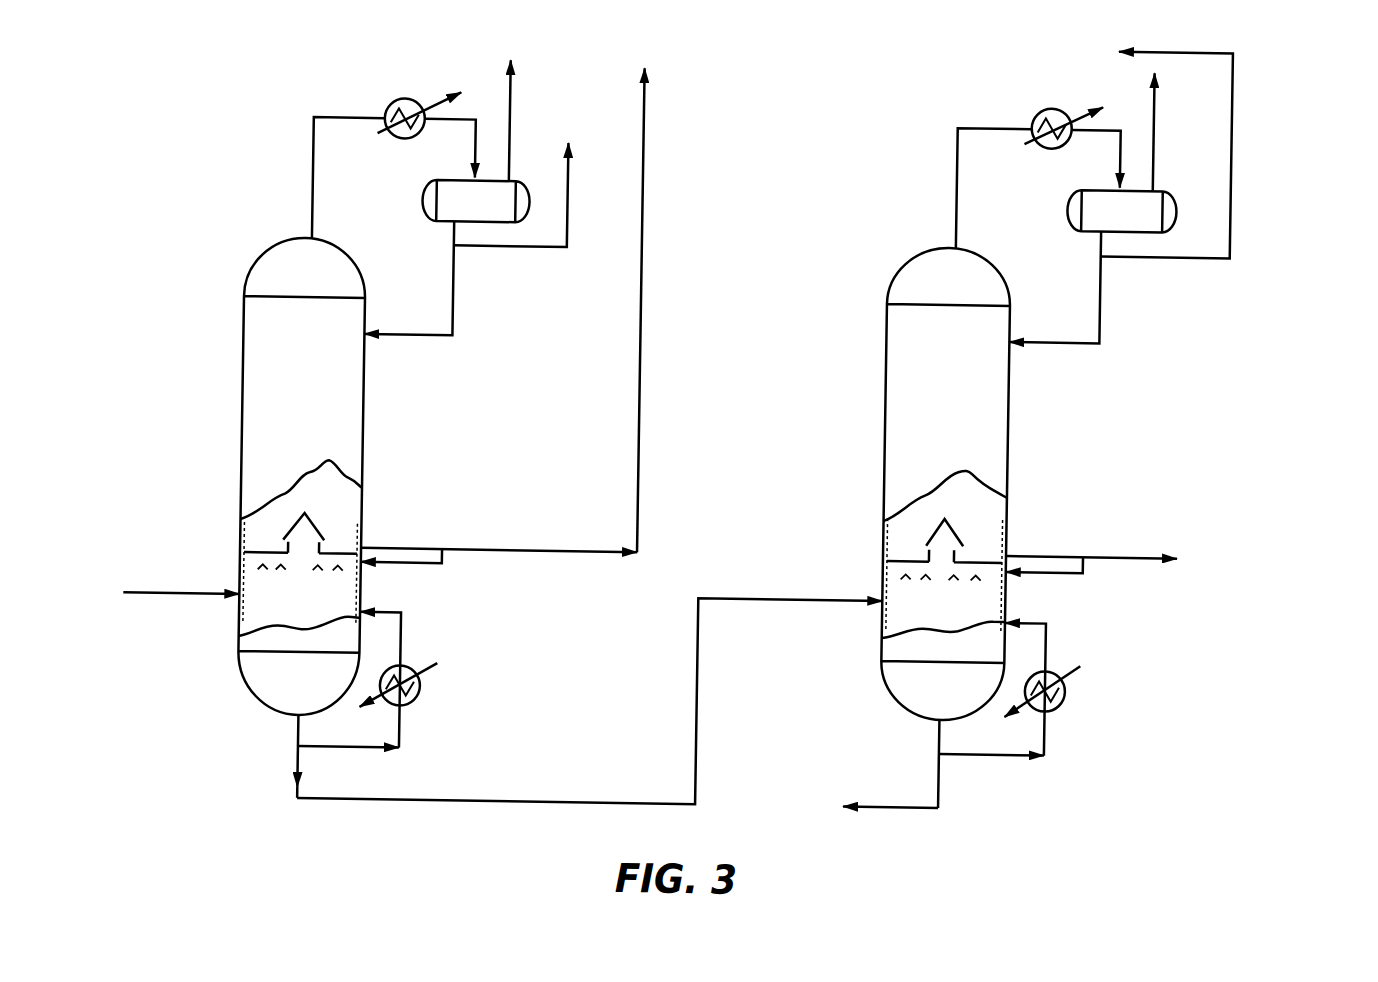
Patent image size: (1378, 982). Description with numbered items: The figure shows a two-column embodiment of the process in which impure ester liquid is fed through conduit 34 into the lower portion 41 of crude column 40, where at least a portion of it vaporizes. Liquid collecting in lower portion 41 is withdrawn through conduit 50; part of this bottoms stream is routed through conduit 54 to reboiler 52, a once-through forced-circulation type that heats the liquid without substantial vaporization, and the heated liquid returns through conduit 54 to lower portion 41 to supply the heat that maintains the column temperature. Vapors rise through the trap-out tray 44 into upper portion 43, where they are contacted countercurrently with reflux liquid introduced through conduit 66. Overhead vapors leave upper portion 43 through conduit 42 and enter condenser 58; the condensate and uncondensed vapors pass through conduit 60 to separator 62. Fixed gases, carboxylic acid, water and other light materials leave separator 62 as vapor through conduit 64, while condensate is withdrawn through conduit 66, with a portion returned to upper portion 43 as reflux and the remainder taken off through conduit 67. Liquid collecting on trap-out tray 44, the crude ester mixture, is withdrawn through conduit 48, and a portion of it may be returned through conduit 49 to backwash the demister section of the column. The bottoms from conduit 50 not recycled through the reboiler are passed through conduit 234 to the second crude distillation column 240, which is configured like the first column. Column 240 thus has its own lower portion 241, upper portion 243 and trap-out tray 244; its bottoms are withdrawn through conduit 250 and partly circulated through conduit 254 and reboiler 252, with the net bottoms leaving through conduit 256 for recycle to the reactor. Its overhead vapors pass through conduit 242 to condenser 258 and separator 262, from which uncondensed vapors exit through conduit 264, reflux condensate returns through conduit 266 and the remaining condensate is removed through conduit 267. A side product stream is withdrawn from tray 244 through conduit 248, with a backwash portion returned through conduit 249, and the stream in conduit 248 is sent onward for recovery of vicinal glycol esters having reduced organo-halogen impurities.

The conduit 34 is at (151, 601).
The crude column 40 is at (241, 438).
The lower portion 41 is at (286, 628).
The conduit 42 is at (308, 188).
The upper portion 43 is at (316, 515).
The trap-out tray 44 is at (292, 527).
The conduit 48 is at (638, 420).
The conduit 49 is at (445, 562).
The conduit 50 is at (302, 732).
The reboiler 52 is at (423, 692).
The conduit 54 is at (406, 610).
The condenser 58 is at (386, 112).
The conduit 60 is at (462, 118).
The separator 62 is at (433, 227).
The conduit 64 is at (505, 108).
The conduit 66 is at (411, 340).
The conduit 67 is at (503, 252).
The conduit 234 is at (700, 700).
The second crude distillation column 240 is at (884, 432).
The lower portion 241 is at (923, 620).
The conduit 242 is at (991, 97).
The upper portion 243 is at (955, 513).
The trap-out tray 244 is at (929, 524).
The conduit 248 is at (1153, 522).
The conduit 249 is at (1070, 568).
The conduit 250 is at (943, 735).
The reboiler 252 is at (1064, 700).
The conduit 254 is at (1048, 618).
The conduit 256 is at (901, 804).
The condenser 258 is at (1028, 104).
The separator 262 is at (1086, 184).
The conduit 264 is at (1149, 130).
The conduit 266 is at (1047, 340).
The conduit 267 is at (1178, 46).